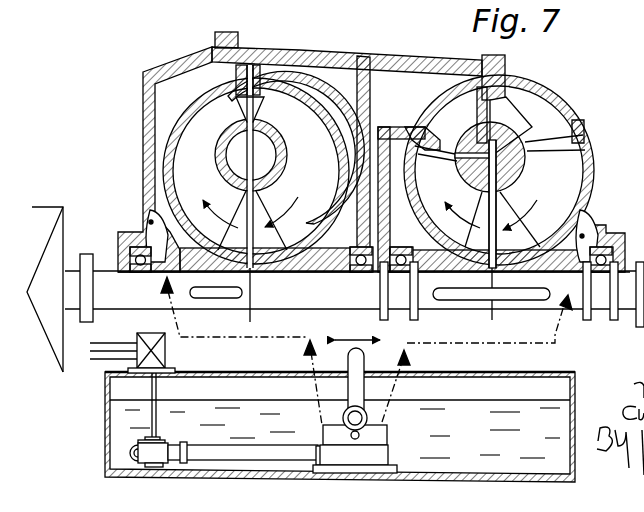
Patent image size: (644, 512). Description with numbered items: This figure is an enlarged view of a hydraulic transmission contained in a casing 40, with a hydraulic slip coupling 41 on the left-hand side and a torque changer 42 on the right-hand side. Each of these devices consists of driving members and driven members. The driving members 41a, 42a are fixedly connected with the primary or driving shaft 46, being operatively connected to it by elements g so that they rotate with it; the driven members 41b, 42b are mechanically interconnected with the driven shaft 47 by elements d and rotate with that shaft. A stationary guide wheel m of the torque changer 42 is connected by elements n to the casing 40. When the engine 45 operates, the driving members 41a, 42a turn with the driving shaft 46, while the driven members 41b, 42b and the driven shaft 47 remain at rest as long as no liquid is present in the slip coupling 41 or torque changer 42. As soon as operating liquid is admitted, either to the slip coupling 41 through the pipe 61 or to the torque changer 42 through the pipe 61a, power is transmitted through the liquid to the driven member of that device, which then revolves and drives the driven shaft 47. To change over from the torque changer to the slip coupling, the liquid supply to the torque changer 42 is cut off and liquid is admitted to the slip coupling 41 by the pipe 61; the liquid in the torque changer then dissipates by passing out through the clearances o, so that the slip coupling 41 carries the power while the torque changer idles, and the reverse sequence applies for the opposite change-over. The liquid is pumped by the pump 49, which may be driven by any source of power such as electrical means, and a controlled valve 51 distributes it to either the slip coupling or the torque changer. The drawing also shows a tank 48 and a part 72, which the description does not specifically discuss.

The casing 40 is at (362, 62).
The slip coupling 41 is at (249, 113).
The driving member of the slip coupling 41a is at (211, 207).
The driven member of the slip coupling 41b is at (287, 210).
The torque changer 42 is at (489, 150).
The driving member of the torque changer 42a is at (452, 213).
The driven member of the torque changer 42b is at (492, 186).
The engine 45 is at (45, 289).
The driving shaft 46 is at (350, 288).
The driven shaft 47 is at (600, 302).
The liquid tank 48 is at (557, 415).
The pump 49 is at (166, 454).
The controlled valve 51 is at (360, 435).
The pipe 61 is at (275, 338).
The pipe 61a is at (453, 358).
The vane guide 72 is at (258, 93).
The clearances o is at (478, 125).
The elements d is at (421, 140).
The elements n is at (498, 72).
The stationary guide wheel m is at (511, 127).
The elements g is at (192, 270).